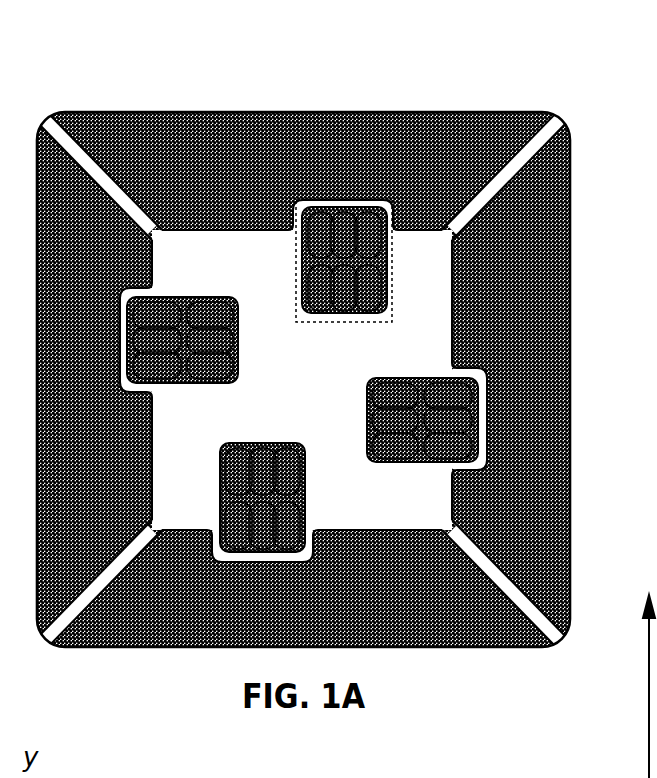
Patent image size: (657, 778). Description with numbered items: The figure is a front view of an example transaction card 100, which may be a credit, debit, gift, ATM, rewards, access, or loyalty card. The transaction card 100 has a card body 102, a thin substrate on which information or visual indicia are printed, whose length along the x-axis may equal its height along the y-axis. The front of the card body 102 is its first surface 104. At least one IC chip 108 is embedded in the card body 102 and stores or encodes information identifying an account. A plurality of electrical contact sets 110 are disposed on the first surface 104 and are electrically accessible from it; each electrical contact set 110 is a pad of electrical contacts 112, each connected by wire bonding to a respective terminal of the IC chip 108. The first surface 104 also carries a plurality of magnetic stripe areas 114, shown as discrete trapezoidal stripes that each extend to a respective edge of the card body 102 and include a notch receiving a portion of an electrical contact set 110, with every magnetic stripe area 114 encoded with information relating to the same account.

The transaction card 100 is at (267, 48).
The card body 102 is at (477, 93).
The first surface 104 is at (397, 510).
The IC chip 108 is at (183, 301).
The electrical contact set 110 is at (375, 260).
The electrical contacts 112 is at (217, 340).
The magnetic stripe areas 114 is at (112, 442).